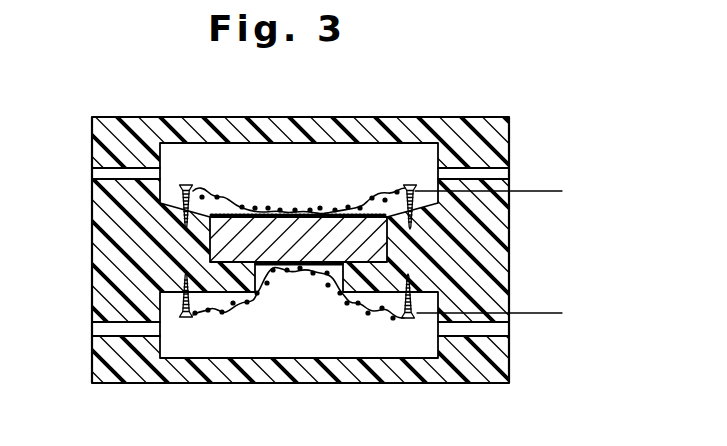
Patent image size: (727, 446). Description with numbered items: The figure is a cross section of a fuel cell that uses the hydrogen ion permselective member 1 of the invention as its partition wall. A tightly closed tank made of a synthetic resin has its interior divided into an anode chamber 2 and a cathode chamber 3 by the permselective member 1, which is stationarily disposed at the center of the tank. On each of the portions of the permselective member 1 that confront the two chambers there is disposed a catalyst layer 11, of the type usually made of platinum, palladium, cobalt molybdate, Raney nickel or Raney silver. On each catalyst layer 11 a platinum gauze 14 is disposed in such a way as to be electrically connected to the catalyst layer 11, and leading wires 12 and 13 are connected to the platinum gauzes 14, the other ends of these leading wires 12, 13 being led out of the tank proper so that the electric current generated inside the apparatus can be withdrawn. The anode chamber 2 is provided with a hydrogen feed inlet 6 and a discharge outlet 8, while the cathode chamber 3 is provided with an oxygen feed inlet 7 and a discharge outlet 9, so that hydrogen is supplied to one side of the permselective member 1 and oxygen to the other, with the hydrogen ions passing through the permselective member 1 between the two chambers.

The hydrogen ion permselective member 1 is at (303, 240).
The anode chamber 2 is at (279, 167).
The cathode chamber 3 is at (312, 338).
The hydrogen feed inlet 6 is at (102, 170).
The oxygen feed inlet 7 is at (102, 330).
The discharge outlet 8 is at (497, 173).
The discharge outlet 9 is at (497, 330).
The catalyst layer 11 is at (222, 200).
The leading wire 12 is at (536, 192).
The leading wire 13 is at (538, 313).
The platinum gauze 14 is at (377, 196).